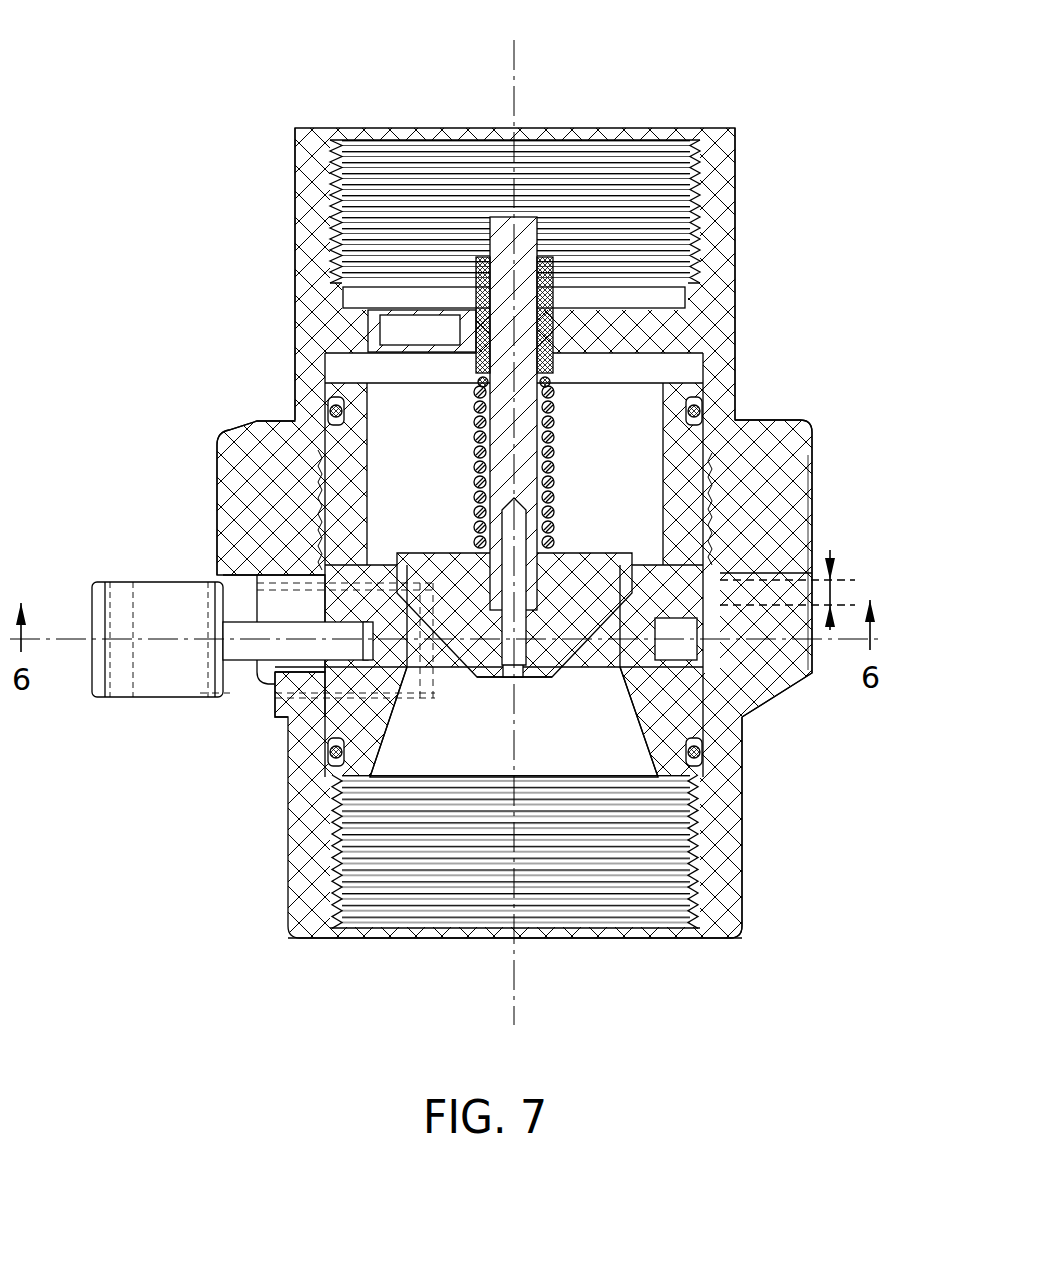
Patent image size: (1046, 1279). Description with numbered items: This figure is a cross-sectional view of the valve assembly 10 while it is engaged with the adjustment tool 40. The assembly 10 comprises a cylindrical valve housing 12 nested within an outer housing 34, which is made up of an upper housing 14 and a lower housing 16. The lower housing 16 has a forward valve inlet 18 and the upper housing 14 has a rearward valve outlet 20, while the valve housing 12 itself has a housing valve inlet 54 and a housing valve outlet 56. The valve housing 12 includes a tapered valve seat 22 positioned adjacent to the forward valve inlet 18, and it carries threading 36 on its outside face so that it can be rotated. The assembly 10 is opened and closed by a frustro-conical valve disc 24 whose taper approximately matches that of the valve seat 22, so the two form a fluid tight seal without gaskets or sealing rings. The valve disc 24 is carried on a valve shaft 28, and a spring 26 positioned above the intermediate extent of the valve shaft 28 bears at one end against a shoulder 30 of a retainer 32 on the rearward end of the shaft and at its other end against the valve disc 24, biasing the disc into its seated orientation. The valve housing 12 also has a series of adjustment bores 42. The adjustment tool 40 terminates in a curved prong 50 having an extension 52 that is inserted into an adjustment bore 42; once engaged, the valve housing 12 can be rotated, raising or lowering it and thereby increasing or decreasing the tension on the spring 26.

The assembly 10 is at (155, 128).
The valve housing 12 is at (730, 445).
The upper housing 14 is at (735, 225).
The lower housing 16 is at (742, 800).
The forward valve inlet 18 is at (640, 947).
The rearward valve outlet 20 is at (665, 135).
The valve seat 22 is at (640, 585).
The valve disc 24 is at (485, 672).
The spring 26 is at (495, 480).
The valve shaft 28 is at (520, 413).
The shoulder 30 is at (690, 300).
The retainer 32 is at (570, 370).
The outer housing 34 is at (290, 418).
The threading 36 is at (715, 520).
The adjustment tool 40 is at (110, 585).
The adjustment bores 42 is at (362, 662).
The curved prong 50 is at (130, 700).
The extension 52 is at (245, 670).
The housing valve inlet 54 is at (602, 757).
The housing valve outlet 56 is at (408, 395).